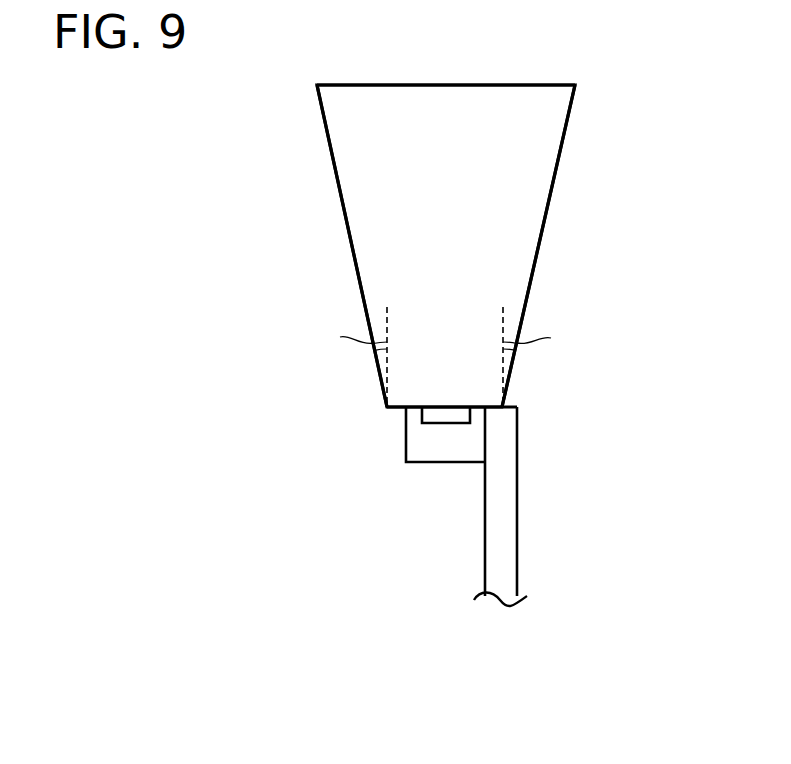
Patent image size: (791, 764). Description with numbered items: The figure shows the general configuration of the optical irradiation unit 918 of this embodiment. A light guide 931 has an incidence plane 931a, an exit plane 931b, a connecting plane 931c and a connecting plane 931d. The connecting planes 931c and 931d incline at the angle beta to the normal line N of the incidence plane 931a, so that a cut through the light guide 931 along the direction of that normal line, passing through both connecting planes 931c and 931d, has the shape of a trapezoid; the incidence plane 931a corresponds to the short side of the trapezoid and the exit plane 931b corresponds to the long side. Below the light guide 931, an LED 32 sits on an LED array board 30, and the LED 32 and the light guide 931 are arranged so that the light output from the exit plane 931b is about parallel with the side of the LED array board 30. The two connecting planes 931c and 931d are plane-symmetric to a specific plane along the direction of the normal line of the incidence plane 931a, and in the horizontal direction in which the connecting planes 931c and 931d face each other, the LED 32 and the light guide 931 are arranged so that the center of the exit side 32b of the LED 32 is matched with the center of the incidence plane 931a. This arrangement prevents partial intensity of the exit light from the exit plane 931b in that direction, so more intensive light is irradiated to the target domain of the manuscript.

The light guide 931 is at (582, 72).
The incidence plane 931a is at (398, 409).
The exit plane 931b is at (470, 85).
The connecting plane 931c is at (338, 188).
The connecting plane 931d is at (552, 197).
The optical irradiation unit 918 is at (616, 266).
The LED 32 is at (406, 452).
The exit side 32b is at (450, 407).
The LED array board 30 is at (517, 517).